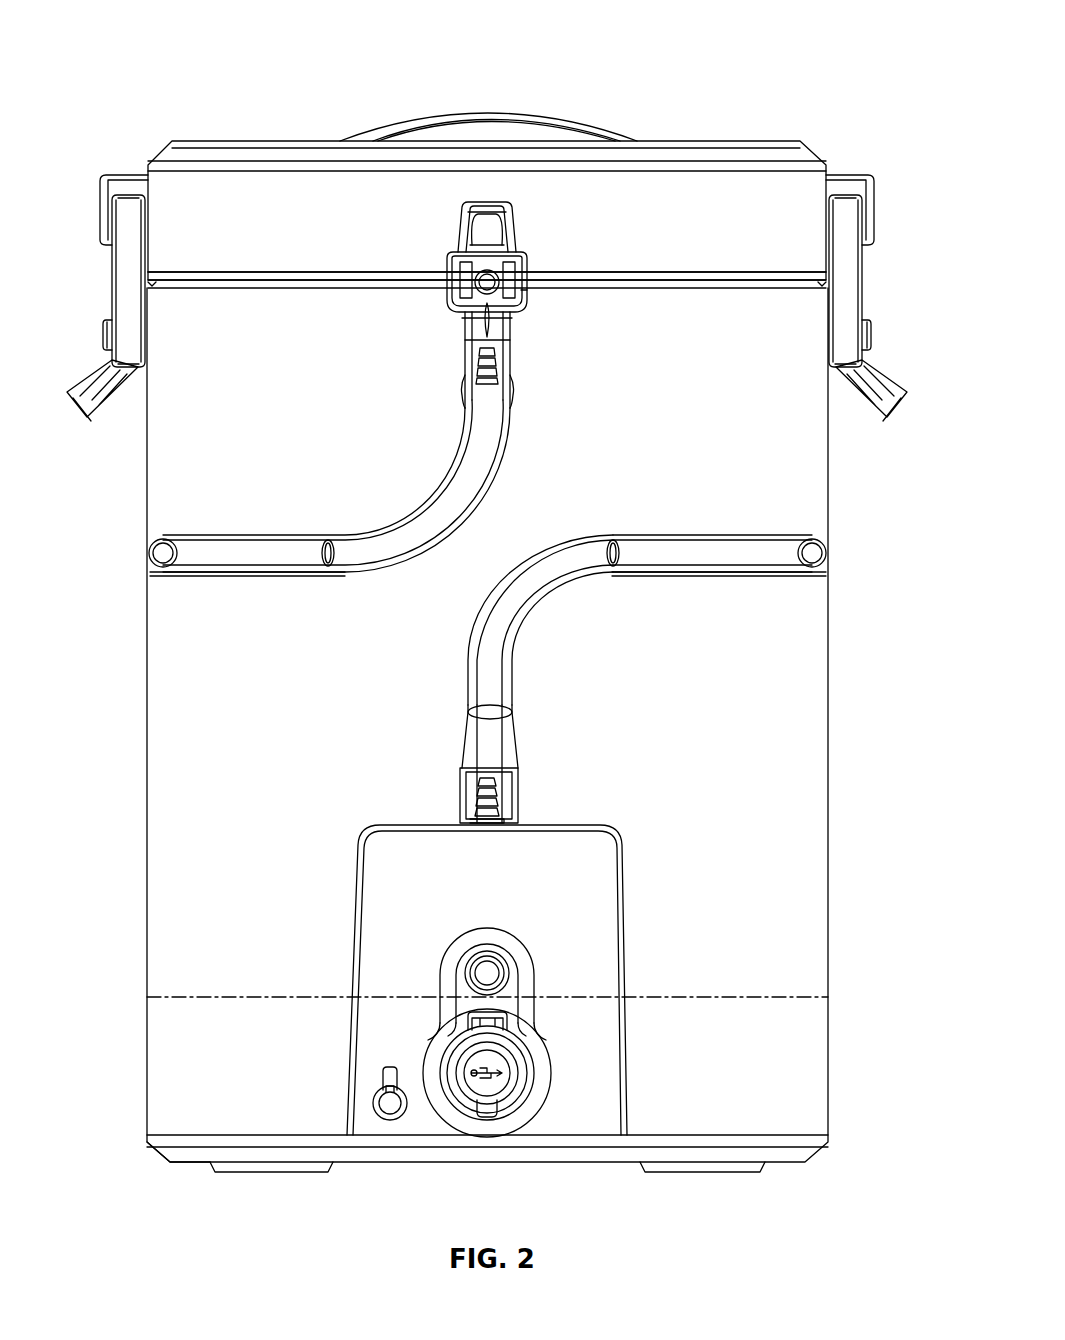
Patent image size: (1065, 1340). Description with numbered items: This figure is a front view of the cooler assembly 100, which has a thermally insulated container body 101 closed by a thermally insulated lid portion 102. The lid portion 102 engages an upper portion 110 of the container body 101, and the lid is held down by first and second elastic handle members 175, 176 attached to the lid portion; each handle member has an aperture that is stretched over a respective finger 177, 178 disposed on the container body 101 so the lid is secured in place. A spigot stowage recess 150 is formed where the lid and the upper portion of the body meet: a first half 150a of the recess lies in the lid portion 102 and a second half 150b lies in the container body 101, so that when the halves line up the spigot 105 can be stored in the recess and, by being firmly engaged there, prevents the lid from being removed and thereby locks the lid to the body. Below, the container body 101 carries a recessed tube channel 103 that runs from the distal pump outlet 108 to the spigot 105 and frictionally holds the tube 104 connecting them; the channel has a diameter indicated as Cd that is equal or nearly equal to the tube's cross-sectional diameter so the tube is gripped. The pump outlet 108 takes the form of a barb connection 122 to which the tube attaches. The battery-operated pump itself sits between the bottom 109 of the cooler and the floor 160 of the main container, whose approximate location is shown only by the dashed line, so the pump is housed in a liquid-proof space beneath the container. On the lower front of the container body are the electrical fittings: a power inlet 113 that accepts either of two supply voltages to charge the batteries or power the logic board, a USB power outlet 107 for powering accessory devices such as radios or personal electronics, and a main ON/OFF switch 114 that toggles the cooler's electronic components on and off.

The cooler assembly 100 is at (128, 42).
The container body 101 is at (828, 808).
The lid portion 102 is at (694, 190).
The recessed tube channel 103 is at (190, 580).
The tube 104 is at (158, 548).
The spigot 105 is at (455, 325).
The USB power outlet 107 is at (532, 1070).
The distal pump outlet 108 is at (500, 840).
The bottom 109 is at (152, 1164).
The upper portion 110 is at (787, 268).
The power inlet 113 is at (368, 1105).
The main ON/OFF switch 114 is at (487, 973).
The barb connection 122 is at (505, 793).
The spigot stowage recess 150 is at (475, 248).
The first half of the stowage recess 150a is at (520, 235).
The second half of the stowage recess 150b is at (527, 298).
The floor 160 is at (797, 997).
The first elastic handle member 175 is at (100, 282).
The second elastic handle member 176 is at (866, 280).
The finger 177 is at (874, 340).
The finger 178 is at (100, 338).